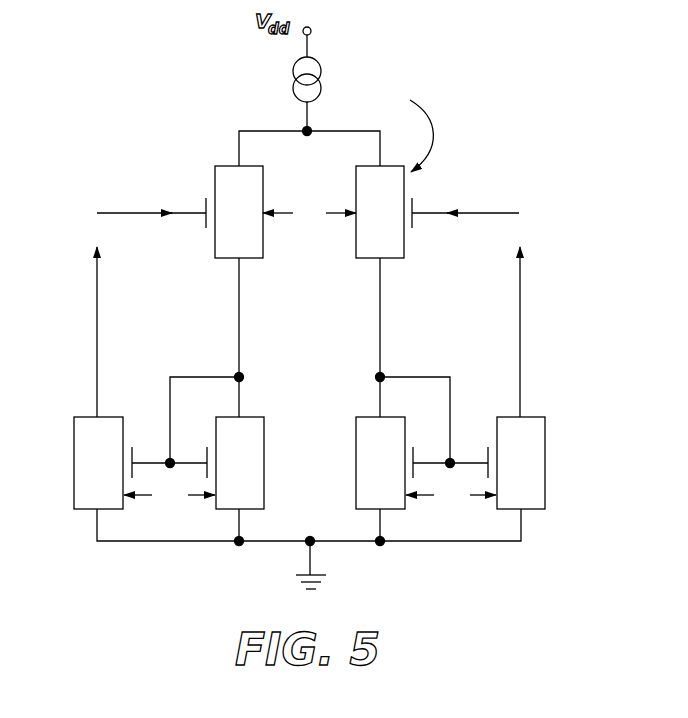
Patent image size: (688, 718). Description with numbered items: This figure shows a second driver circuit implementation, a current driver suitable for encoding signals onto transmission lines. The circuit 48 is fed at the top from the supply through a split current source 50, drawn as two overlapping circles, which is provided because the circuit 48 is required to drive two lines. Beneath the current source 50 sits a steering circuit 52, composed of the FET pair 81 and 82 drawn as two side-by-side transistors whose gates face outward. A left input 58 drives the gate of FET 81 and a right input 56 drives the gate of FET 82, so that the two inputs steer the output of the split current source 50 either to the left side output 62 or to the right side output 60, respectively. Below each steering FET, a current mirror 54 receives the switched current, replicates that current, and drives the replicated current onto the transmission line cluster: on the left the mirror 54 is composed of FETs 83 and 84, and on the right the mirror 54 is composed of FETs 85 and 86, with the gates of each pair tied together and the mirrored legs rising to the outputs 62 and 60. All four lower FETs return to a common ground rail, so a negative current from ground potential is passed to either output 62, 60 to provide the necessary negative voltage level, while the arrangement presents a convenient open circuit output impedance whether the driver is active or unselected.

The circuit 48 is at (104, 125).
The split current source 50 is at (294, 85).
The steering circuit 52 is at (309, 213).
The current mirror 54 is at (310, 495).
The right input 56 is at (430, 212).
The left input 58 is at (190, 212).
The right side output 60 is at (520, 332).
The left side output 62 is at (97, 330).
The FET 81 is at (248, 178).
The FET 82 is at (365, 245).
The FET 83 is at (80, 500).
The FET 84 is at (250, 429).
The FET 85 is at (365, 500).
The FET 86 is at (533, 428).